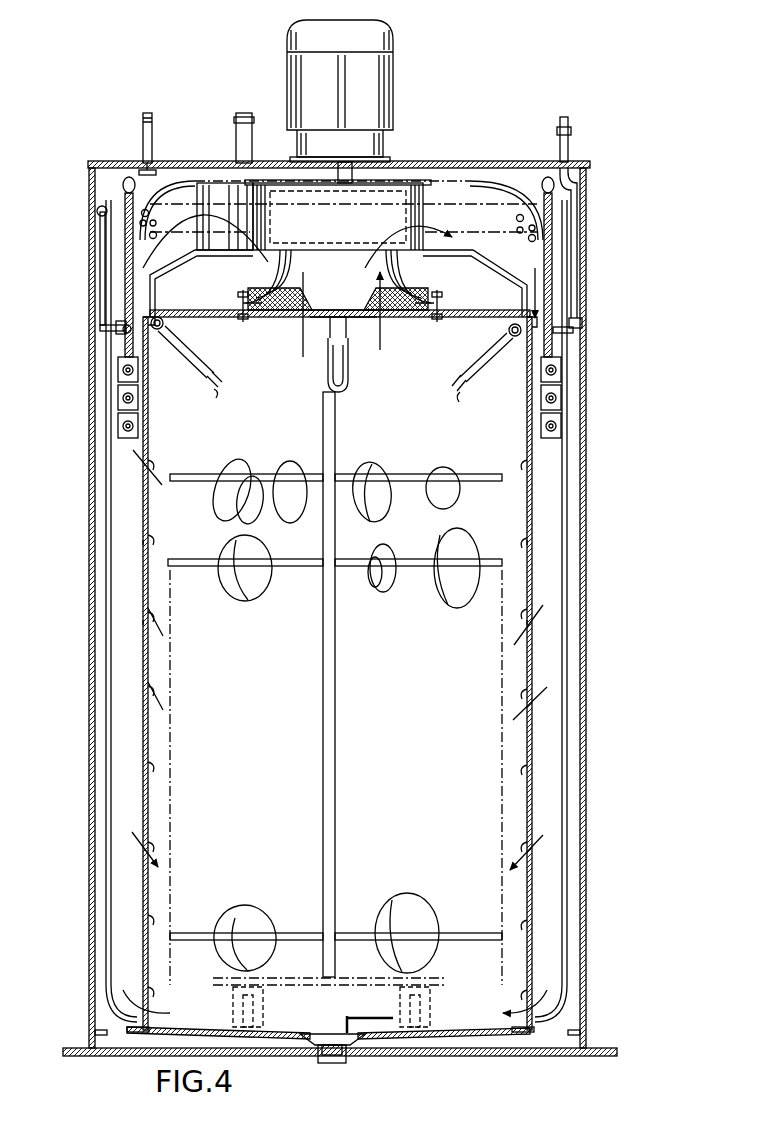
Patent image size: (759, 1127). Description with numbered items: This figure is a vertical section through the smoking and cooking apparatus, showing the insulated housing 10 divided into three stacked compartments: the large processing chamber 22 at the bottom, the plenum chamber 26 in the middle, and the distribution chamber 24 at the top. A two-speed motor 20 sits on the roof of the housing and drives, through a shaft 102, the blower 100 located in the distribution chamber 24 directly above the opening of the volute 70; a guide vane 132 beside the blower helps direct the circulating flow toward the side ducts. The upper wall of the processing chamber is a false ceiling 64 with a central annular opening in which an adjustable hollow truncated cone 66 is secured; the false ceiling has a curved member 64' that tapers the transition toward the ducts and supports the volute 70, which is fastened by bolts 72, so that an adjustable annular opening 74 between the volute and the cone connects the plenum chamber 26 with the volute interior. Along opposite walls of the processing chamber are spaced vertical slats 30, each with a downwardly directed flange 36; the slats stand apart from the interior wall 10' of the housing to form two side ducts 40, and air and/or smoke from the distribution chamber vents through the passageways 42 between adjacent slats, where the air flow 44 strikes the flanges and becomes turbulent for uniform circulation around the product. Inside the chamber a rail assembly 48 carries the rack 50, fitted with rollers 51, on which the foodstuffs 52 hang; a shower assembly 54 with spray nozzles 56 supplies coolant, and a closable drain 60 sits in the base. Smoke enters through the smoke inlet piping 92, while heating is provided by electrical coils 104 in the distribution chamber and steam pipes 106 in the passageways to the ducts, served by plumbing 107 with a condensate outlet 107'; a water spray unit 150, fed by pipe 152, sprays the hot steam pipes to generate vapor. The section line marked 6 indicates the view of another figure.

The housing 10 is at (367, 608).
The interior wall 10' is at (601, 608).
The two-speed motor 20 is at (383, 30).
The processing chamber 22 is at (502, 532).
The distribution chamber 24 is at (513, 181).
The plenum chamber 26 is at (553, 258).
The slats 30 is at (142, 795).
The flange 36 is at (153, 847).
The side ducts 40 is at (128, 576).
The passageways 42 is at (142, 920).
The air flow 44 is at (147, 693).
The rail assembly 48 is at (348, 389).
The rack 50 is at (337, 440).
The rollers 51 is at (260, 1027).
The foodstuffs 52 is at (447, 543).
The shower assembly 54 is at (209, 358).
The spray nozzles 56 is at (214, 390).
The closable drain 60 is at (350, 1060).
The false ceiling 64 is at (340, 329).
The curved member 64' is at (344, 264).
The truncated cone 66 is at (400, 318).
The volute 70 is at (393, 283).
The bolts 72 is at (238, 300).
The annular opening 74 is at (400, 307).
The smoke inlet piping 92 is at (238, 118).
The blower 100 is at (423, 208).
The shaft 102 is at (392, 160).
The coils 104 is at (143, 213).
The steam pipes 106 is at (118, 430).
The plumbing 107 is at (342, 267).
The condensate outlet 107' is at (132, 130).
The guide vane 132 is at (218, 192).
The water spray unit 150 is at (116, 330).
The pipe 152 is at (580, 112).
The section line 6- 6 is at (536, 247).